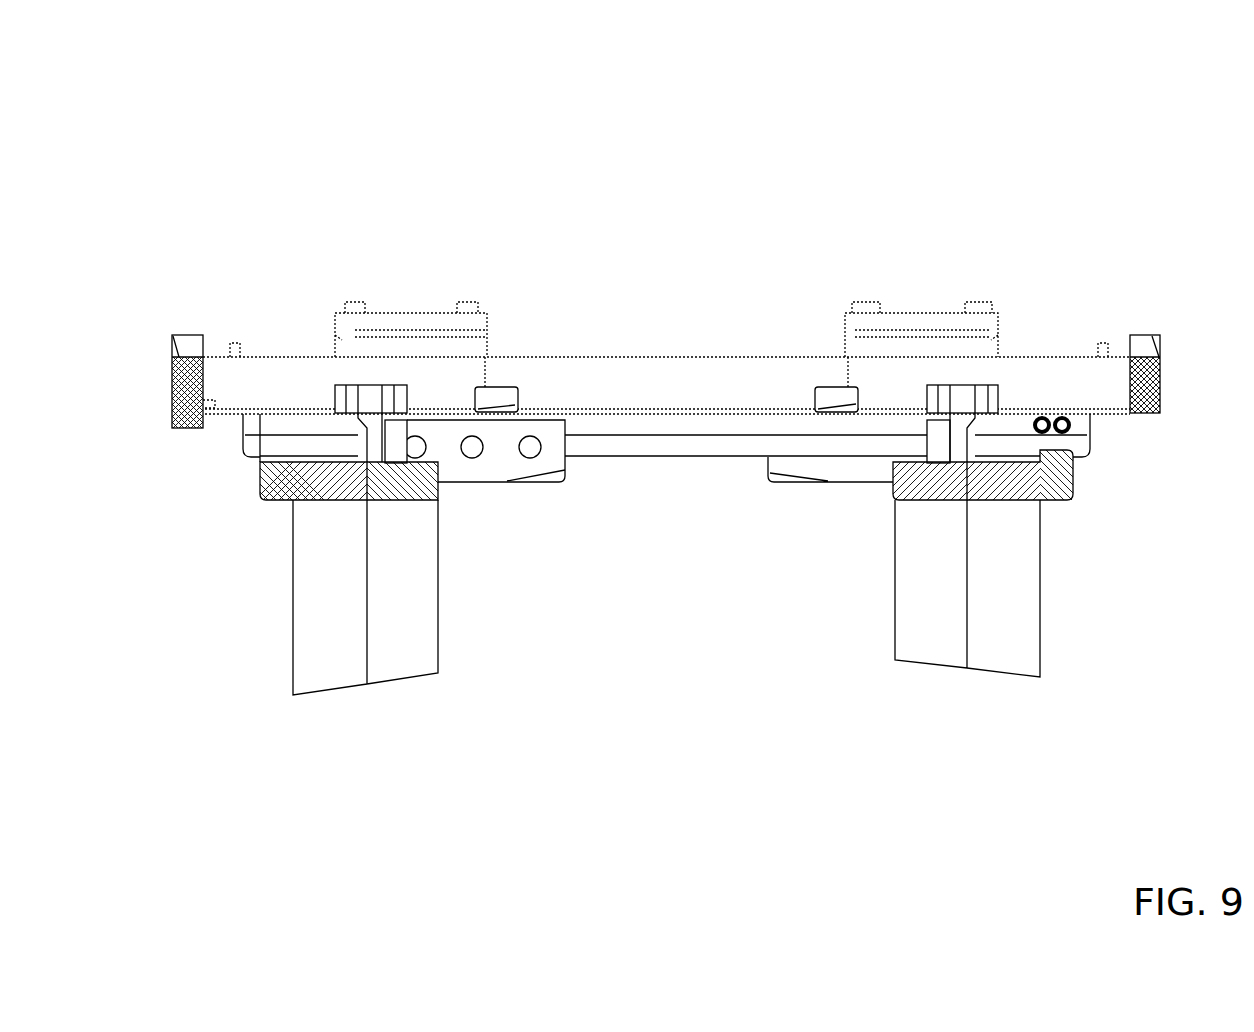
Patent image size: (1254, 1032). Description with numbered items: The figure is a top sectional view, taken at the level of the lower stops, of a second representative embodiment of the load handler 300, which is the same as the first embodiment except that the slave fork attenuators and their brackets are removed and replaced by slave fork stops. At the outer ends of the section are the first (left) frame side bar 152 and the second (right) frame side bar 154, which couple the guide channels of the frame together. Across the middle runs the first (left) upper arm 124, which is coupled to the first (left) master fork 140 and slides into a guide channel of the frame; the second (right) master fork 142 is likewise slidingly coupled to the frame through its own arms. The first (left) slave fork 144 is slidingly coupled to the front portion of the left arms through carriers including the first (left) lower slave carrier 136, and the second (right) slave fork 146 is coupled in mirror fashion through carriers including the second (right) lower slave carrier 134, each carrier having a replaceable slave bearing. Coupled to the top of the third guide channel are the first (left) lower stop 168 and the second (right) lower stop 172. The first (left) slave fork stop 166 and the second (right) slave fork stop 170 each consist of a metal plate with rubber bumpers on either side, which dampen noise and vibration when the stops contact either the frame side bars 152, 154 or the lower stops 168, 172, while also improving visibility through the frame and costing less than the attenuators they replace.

The load handler 300 is at (262, 96).
The first (left) upper arm 124 is at (1093, 435).
The second (right) lower slave carrier 134 is at (818, 465).
The first (left) lower slave carrier 136 is at (513, 463).
The first (left) master fork 140 is at (319, 477).
The second (right) master fork 142 is at (1000, 477).
The first (left) slave fork 144 is at (408, 477).
The second (right) slave fork 146 is at (920, 477).
The first (left) frame side bar 152 is at (187, 383).
The second (right) frame side bar 154 is at (1147, 383).
The first (left) slave fork stop 166 is at (367, 393).
The first (left) lower stop 168 is at (503, 395).
The second (right) slave fork stop 170 is at (963, 393).
The second (right) lower stop 172 is at (838, 393).